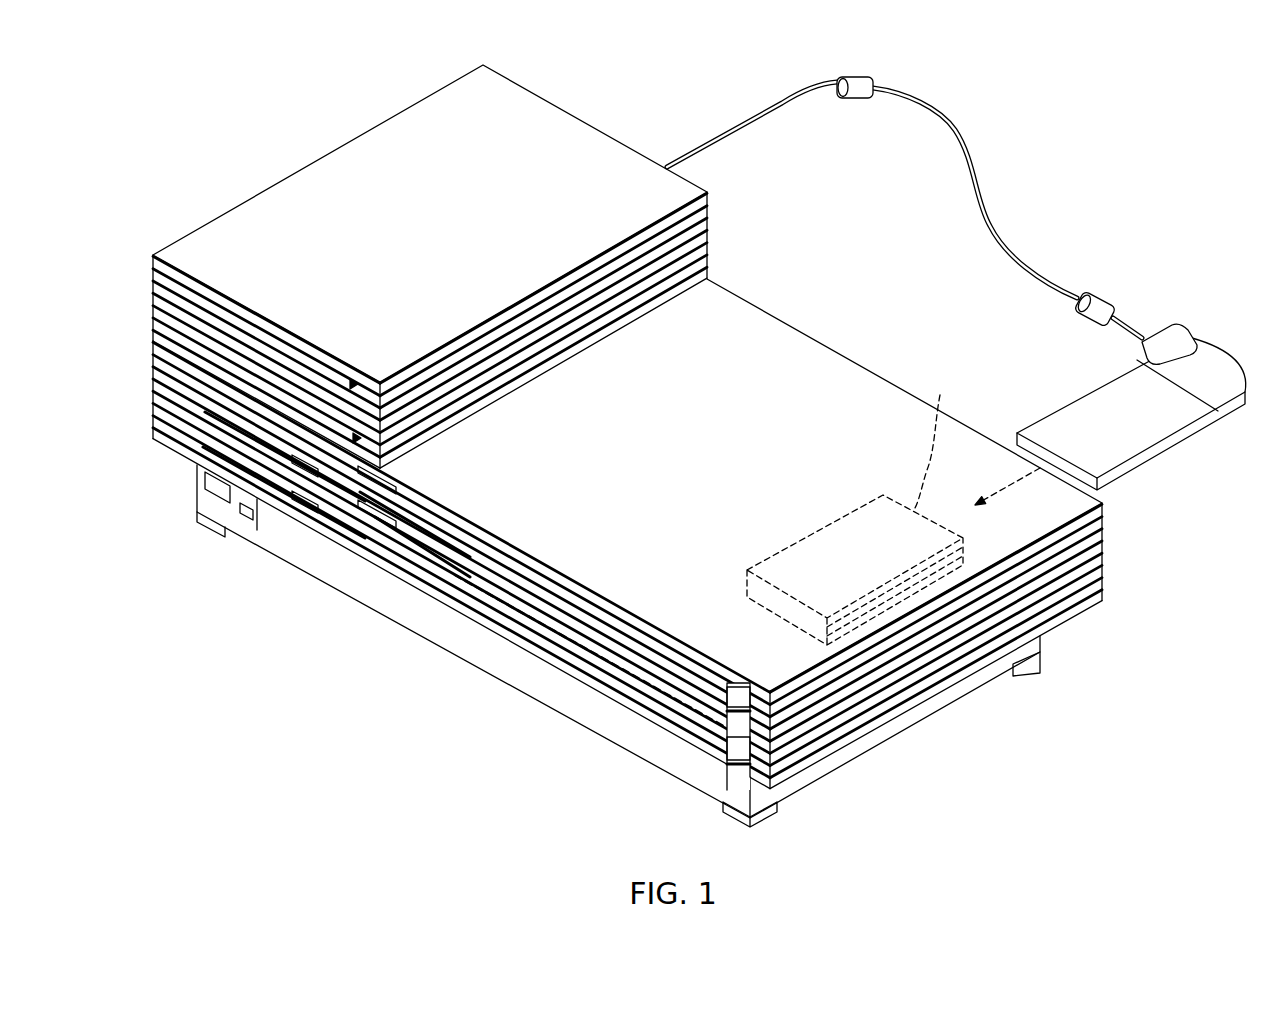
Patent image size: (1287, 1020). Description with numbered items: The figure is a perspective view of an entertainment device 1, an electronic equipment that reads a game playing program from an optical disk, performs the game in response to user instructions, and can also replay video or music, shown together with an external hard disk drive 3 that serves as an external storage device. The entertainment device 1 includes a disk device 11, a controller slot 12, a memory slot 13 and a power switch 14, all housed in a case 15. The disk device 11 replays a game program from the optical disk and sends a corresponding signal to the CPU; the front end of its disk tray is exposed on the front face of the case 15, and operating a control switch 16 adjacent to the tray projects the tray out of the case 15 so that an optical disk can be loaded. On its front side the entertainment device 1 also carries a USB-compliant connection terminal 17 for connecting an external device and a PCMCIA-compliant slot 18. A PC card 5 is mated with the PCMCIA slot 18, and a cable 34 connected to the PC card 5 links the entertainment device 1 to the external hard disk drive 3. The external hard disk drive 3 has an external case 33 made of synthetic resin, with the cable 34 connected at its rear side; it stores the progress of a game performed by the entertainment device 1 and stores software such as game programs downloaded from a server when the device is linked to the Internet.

The entertainment device 1 is at (643, 538).
The external hard disk drive 3 is at (430, 257).
The PC card 5 is at (1160, 432).
The disk device 11 is at (560, 627).
The controller slot 12 is at (258, 462).
The memory slot 13 is at (215, 412).
The power switch 14 is at (740, 690).
The case 15 is at (1105, 563).
The control switch 16 is at (733, 753).
The USB-compliant connection terminal 17 is at (196, 478).
The PCMCIA slot 18 is at (893, 504).
The external case 33 is at (613, 307).
The cable 34 is at (977, 148).